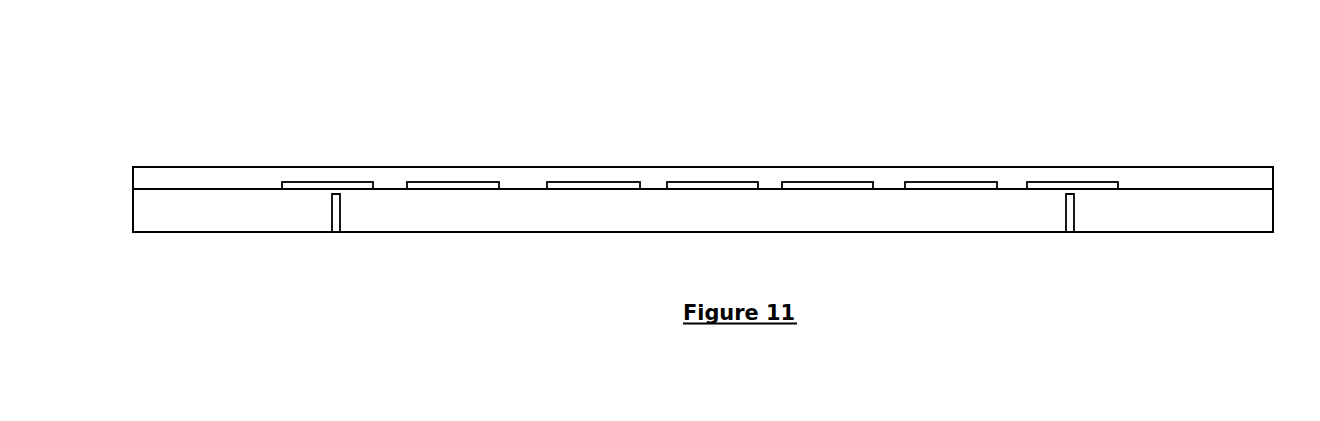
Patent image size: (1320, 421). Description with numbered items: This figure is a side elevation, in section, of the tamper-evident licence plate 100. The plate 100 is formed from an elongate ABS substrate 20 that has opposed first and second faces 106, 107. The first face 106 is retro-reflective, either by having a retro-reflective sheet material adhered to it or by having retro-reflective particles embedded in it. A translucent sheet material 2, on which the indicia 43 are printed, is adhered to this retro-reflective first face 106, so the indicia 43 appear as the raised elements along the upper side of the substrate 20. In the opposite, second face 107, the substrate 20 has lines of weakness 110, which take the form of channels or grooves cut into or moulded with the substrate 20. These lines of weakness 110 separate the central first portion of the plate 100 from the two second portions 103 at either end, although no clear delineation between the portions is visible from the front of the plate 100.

The licence plate 100 is at (332, 126).
The translucent sheet material 2 is at (378, 173).
The indicia 43 is at (903, 183).
The first face 106 is at (1260, 190).
The second portions 103 is at (228, 218).
The lines of weakness 110 is at (333, 235).
The substrate 20 is at (838, 217).
The second face 107 is at (1190, 233).